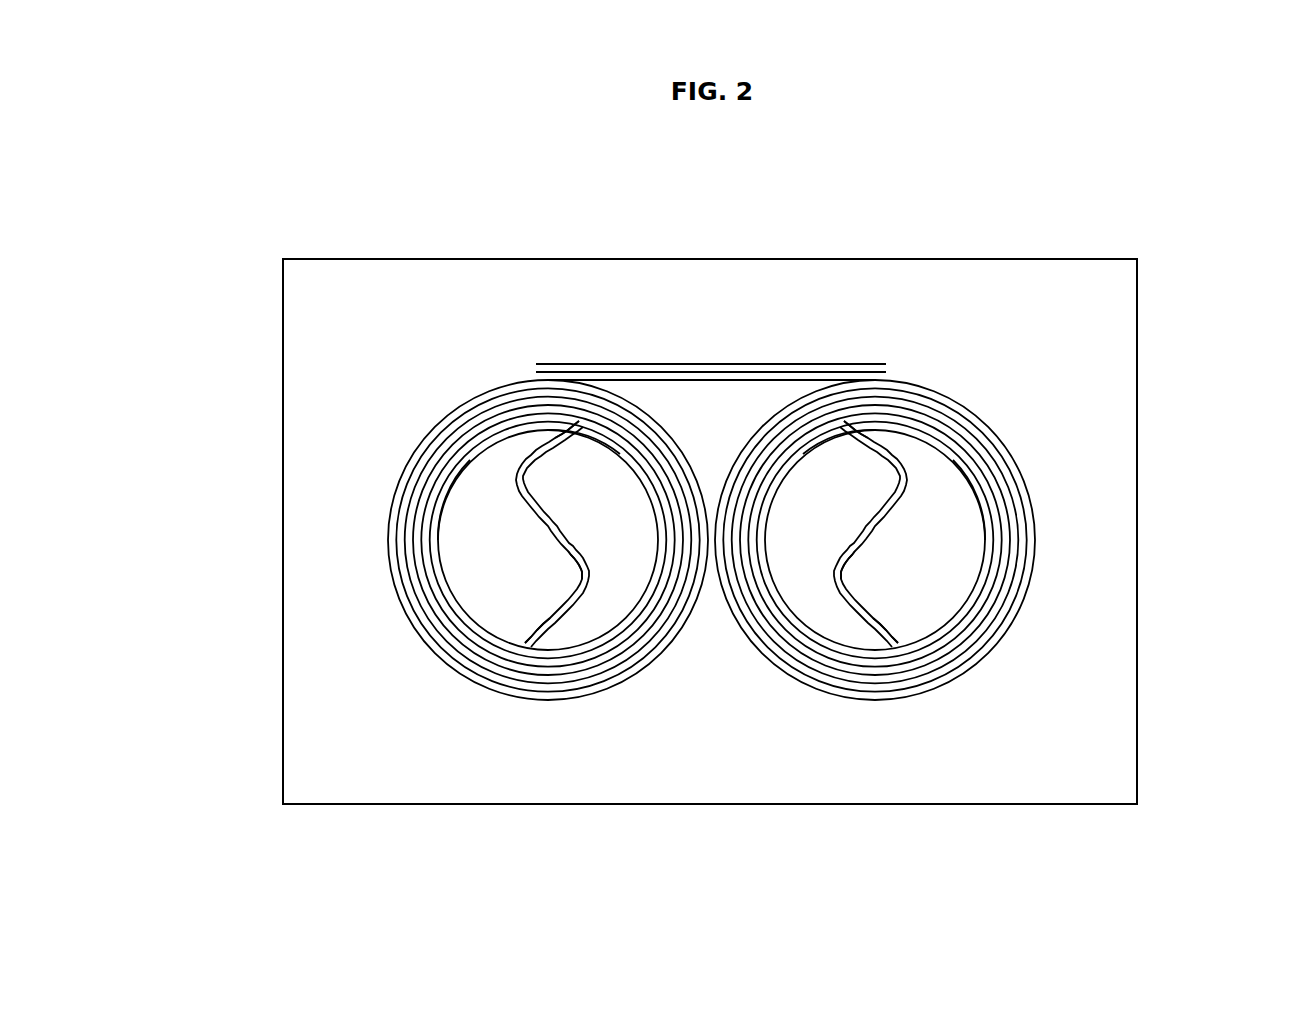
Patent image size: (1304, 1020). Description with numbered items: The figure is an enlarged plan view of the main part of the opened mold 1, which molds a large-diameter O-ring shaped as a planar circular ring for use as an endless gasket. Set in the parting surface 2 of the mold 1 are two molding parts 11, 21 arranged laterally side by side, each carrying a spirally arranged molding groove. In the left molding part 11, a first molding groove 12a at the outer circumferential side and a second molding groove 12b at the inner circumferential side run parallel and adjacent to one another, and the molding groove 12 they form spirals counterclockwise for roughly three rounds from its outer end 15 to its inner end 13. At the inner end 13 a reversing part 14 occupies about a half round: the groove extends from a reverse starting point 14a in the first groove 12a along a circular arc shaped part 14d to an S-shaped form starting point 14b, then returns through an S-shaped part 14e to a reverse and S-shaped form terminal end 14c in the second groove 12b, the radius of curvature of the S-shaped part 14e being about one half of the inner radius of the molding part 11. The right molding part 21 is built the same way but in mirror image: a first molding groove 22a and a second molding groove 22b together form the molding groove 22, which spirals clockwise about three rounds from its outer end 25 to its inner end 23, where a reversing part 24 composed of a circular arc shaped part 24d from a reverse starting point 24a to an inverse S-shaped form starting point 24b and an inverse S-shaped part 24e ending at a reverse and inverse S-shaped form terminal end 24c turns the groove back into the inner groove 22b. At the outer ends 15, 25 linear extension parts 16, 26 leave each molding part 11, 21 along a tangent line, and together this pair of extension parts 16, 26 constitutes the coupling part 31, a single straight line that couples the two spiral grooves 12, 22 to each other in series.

The mold 1 is at (332, 268).
The parting surface 2 is at (1020, 297).
The molding part 11 is at (403, 615).
The molding groove 12 is at (208, 357).
The first molding groove 12a is at (398, 473).
The second molding groove 12b is at (400, 500).
The inner end 13 is at (608, 427).
The reversing part 14 is at (572, 623).
The reverse starting point 14a is at (583, 426).
The S-shaped form starting point 14b is at (523, 643).
The reverse and S-shaped form terminal end 14c is at (595, 427).
The circular arc shaped part 14d is at (447, 478).
The S-shaped part 14e is at (582, 567).
The outer end 15 is at (538, 366).
The linear extension part 16 is at (586, 374).
The molding part 21 is at (1032, 590).
The molding groove 22 is at (1233, 327).
The first molding groove 22a is at (1010, 447).
The second molding groove 22b is at (1017, 477).
The inner end 23 is at (813, 432).
The reversing part 24 is at (845, 615).
The reverse starting point 24a is at (833, 424).
The inverse S-shaped form starting point 24b is at (898, 643).
The reverse and inverse S-shaped form terminal end 24c is at (817, 432).
The circular arc shaped part 24d is at (973, 475).
The inverse S-shaped part 24e is at (843, 567).
The outer end 25 is at (882, 366).
The linear extension part 26 is at (830, 370).
The coupling part 31 is at (706, 372).